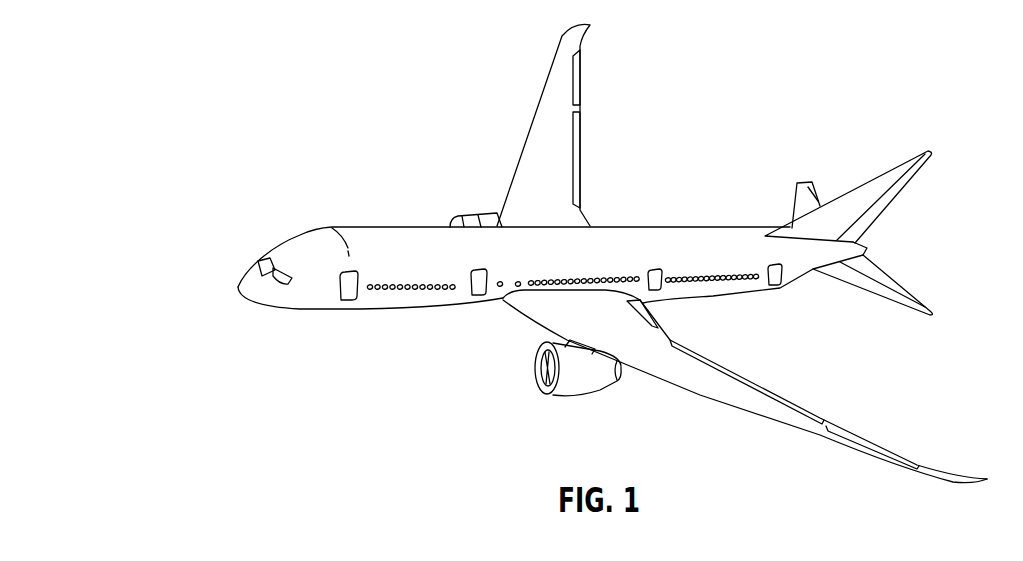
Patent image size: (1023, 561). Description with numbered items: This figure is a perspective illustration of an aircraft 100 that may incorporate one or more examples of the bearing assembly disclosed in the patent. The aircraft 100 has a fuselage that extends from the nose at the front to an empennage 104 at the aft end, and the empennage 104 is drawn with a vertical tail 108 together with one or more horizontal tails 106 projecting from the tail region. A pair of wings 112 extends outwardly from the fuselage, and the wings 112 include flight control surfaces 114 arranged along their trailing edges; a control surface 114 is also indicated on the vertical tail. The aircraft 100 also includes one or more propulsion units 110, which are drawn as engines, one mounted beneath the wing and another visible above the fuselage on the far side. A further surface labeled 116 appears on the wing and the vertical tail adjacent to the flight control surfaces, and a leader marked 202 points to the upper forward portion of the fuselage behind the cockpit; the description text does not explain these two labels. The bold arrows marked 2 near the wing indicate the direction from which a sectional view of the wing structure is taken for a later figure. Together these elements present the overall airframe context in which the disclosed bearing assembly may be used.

The aircraft 100 is at (283, 141).
The fuselage section 202 is at (372, 227).
The propulsion unit 110 is at (460, 215).
The wing 112 is at (535, 105).
The flight control surface 114 is at (581, 80).
The control surface (flap) 116 is at (581, 200).
The vertical tail 108 is at (893, 150).
The empennage 104 is at (870, 252).
The horizontal tail 106 is at (793, 194).
The section view indicator 2 is at (712, 404).